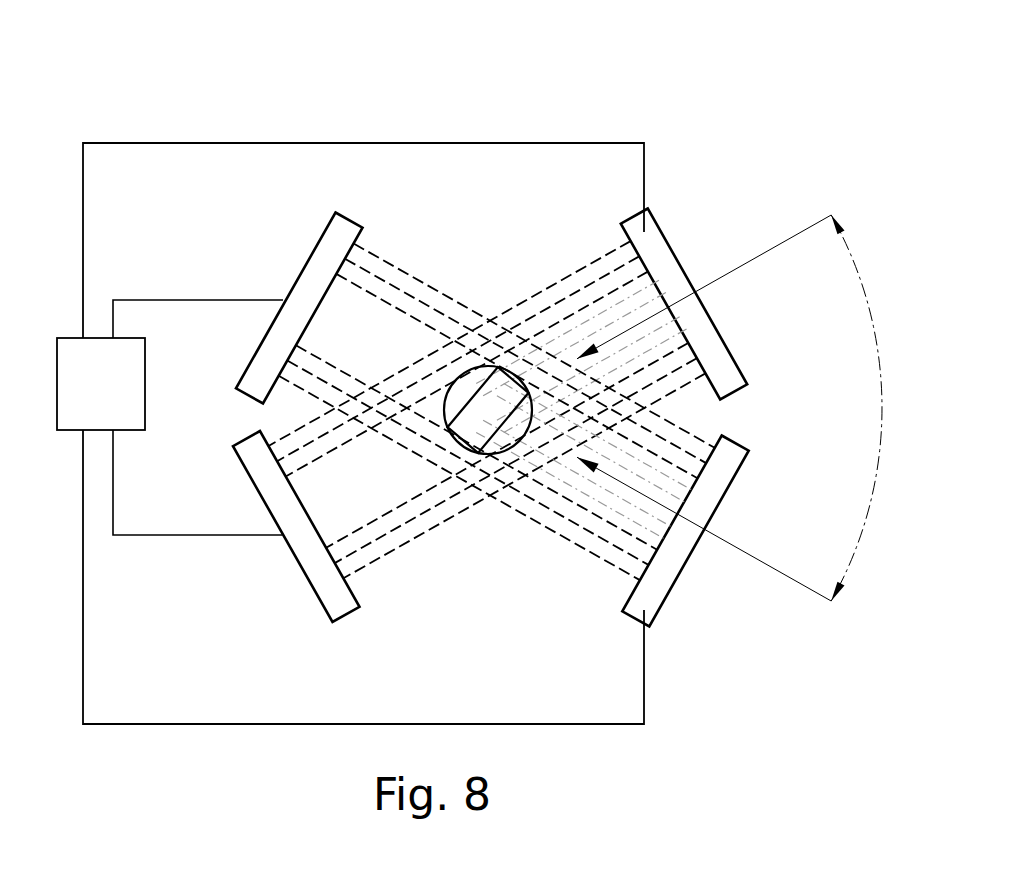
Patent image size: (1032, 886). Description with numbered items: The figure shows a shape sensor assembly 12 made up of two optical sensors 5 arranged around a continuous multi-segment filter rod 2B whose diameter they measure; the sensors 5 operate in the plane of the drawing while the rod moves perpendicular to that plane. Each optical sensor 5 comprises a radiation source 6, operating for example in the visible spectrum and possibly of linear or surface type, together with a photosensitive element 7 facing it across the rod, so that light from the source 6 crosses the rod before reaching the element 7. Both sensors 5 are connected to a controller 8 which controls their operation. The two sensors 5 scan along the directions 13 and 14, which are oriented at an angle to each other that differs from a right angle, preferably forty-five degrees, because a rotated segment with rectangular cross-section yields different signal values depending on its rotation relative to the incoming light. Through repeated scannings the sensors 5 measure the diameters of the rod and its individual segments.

The shape sensor assembly 12 is at (411, 118).
The controller 8 is at (170, 417).
The photosensitive element 7 is at (317, 288).
The radiation source 6 is at (667, 277).
The optical sensor 5 is at (735, 337).
The scanning direction 13 is at (625, 333).
The scanning direction 14 is at (660, 512).
The sample / measuring cell 2B is at (481, 395).